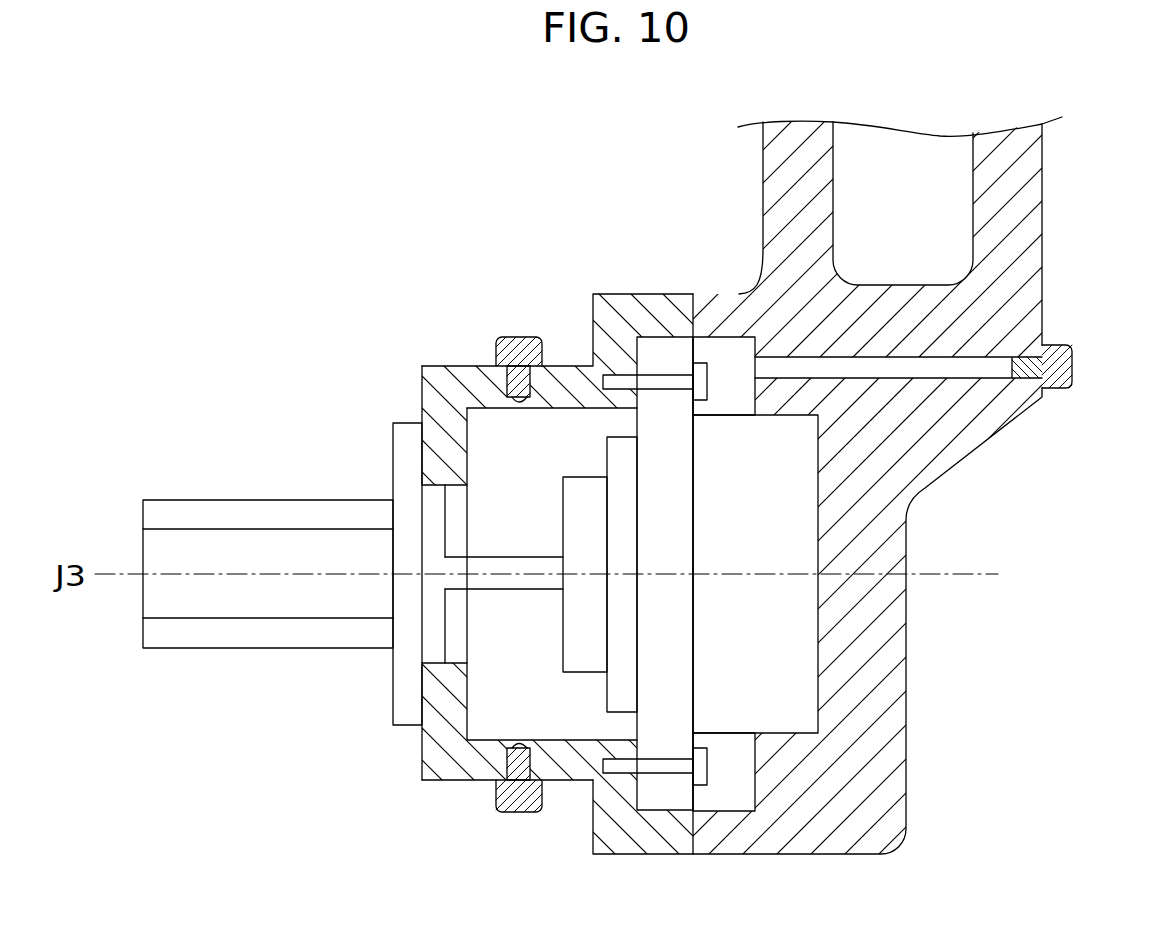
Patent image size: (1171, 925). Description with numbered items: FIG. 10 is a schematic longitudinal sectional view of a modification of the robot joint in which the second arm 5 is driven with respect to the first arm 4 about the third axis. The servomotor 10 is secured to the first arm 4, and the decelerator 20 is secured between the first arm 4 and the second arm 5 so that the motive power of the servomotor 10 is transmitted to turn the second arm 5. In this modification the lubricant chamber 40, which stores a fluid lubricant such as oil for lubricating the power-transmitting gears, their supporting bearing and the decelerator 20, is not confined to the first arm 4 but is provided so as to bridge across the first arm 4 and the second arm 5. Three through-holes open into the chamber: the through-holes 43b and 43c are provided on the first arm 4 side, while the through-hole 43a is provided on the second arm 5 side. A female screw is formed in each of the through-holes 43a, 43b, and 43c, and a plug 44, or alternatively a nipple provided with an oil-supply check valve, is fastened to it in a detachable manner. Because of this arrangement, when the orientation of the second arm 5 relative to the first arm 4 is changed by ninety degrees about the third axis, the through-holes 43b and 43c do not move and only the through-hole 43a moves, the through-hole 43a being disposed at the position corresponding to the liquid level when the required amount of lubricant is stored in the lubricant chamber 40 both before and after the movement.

The first arm 4 is at (628, 293).
The second arm 5 is at (1042, 222).
The servomotor 10 is at (280, 668).
The decelerator 20 is at (845, 646).
The lubricant chamber 40 is at (472, 446).
The through-hole 43a is at (996, 372).
The through-hole 43b is at (520, 740).
The through-hole 43c is at (522, 410).
The plug 44 is at (517, 337).